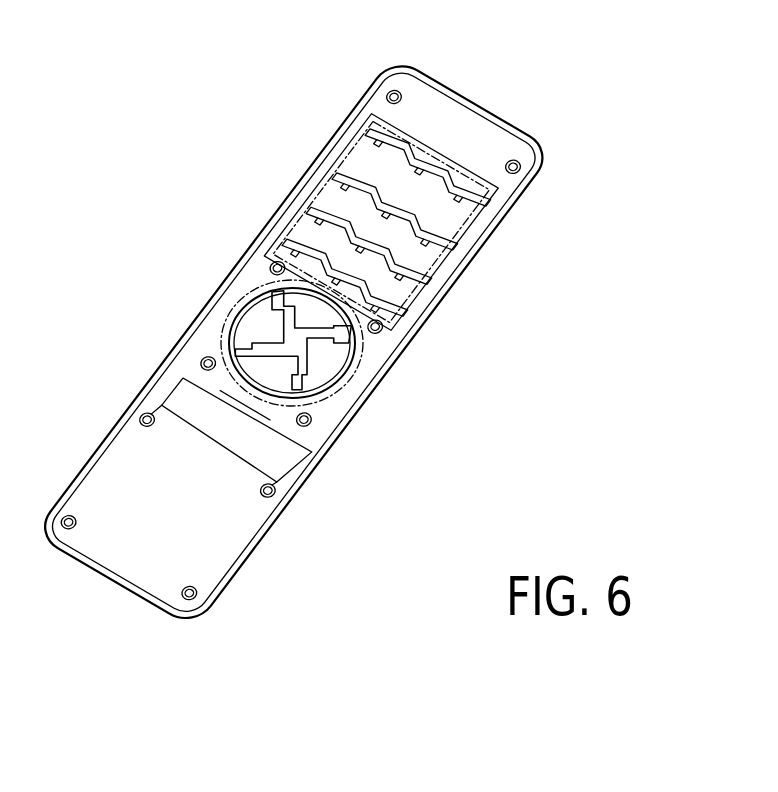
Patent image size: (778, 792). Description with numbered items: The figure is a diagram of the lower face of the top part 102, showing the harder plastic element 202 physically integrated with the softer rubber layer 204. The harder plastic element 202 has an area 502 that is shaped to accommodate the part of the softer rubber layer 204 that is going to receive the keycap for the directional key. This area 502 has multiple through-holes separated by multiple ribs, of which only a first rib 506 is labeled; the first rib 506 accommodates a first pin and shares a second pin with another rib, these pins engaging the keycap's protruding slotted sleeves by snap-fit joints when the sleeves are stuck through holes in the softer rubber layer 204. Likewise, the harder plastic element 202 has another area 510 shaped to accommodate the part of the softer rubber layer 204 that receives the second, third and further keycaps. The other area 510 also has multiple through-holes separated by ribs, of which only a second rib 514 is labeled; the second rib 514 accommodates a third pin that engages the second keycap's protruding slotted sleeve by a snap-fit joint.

The top part 102 is at (533, 322).
The harder plastic element 202 is at (220, 502).
The softer rubber layer 204 is at (412, 272).
The area 502 is at (230, 342).
The first rib 506 is at (262, 310).
The other area 510 is at (334, 191).
The second rib 514 is at (391, 172).